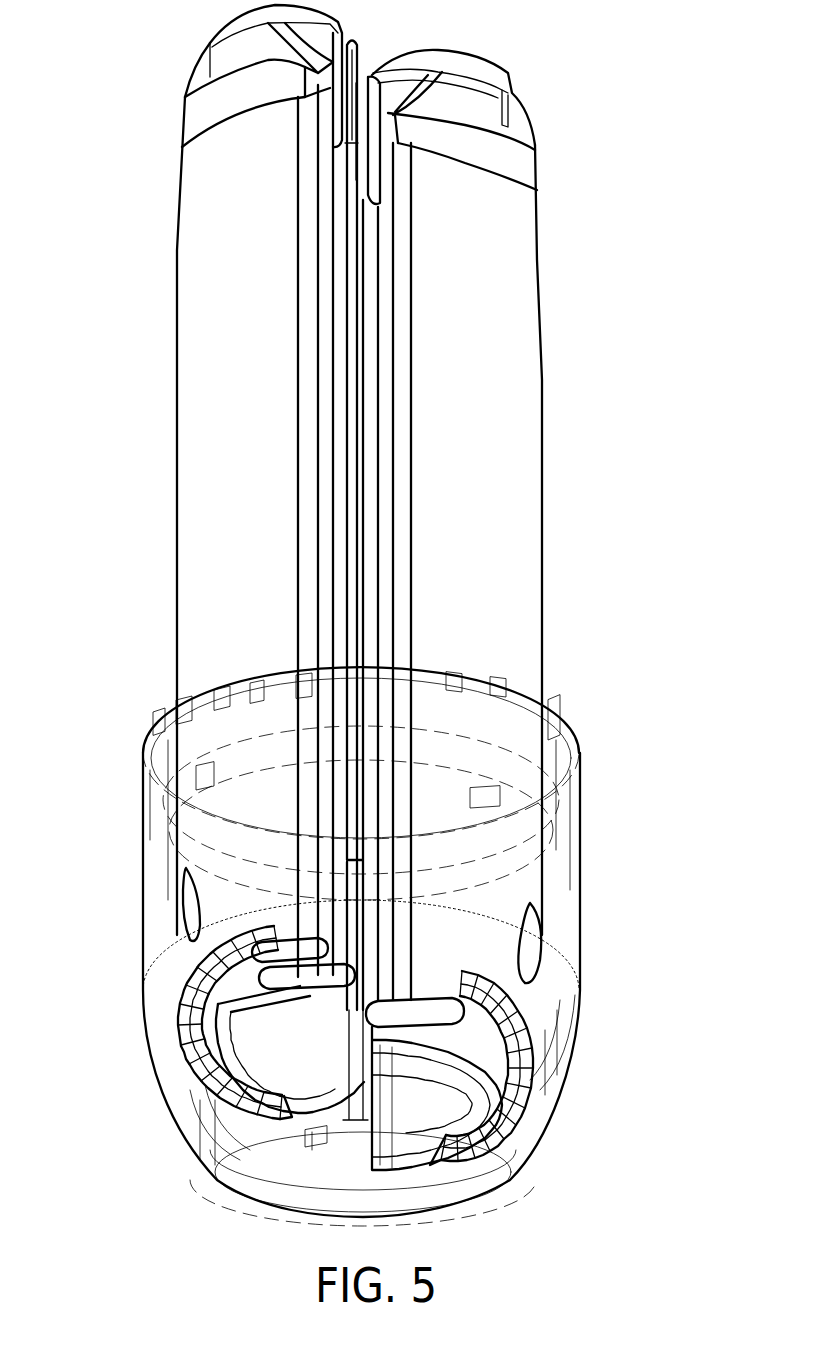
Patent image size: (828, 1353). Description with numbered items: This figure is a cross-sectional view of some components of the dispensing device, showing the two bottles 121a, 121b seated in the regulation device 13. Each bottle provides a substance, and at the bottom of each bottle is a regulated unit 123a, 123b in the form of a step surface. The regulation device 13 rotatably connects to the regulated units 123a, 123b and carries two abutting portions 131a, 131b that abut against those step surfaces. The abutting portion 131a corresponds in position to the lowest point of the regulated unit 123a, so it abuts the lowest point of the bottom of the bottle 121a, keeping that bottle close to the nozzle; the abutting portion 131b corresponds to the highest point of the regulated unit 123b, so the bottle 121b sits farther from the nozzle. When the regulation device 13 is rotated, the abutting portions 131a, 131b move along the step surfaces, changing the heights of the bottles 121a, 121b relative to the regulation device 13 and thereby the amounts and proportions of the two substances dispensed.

The regulation device 13 is at (632, 880).
The bottle 121a is at (195, 437).
The bottle 121b is at (515, 428).
The regulated unit 123a is at (177, 1004).
The regulated unit 123b is at (540, 1080).
The abutting portion 131a is at (205, 1135).
The abutting portion 131b is at (557, 1032).